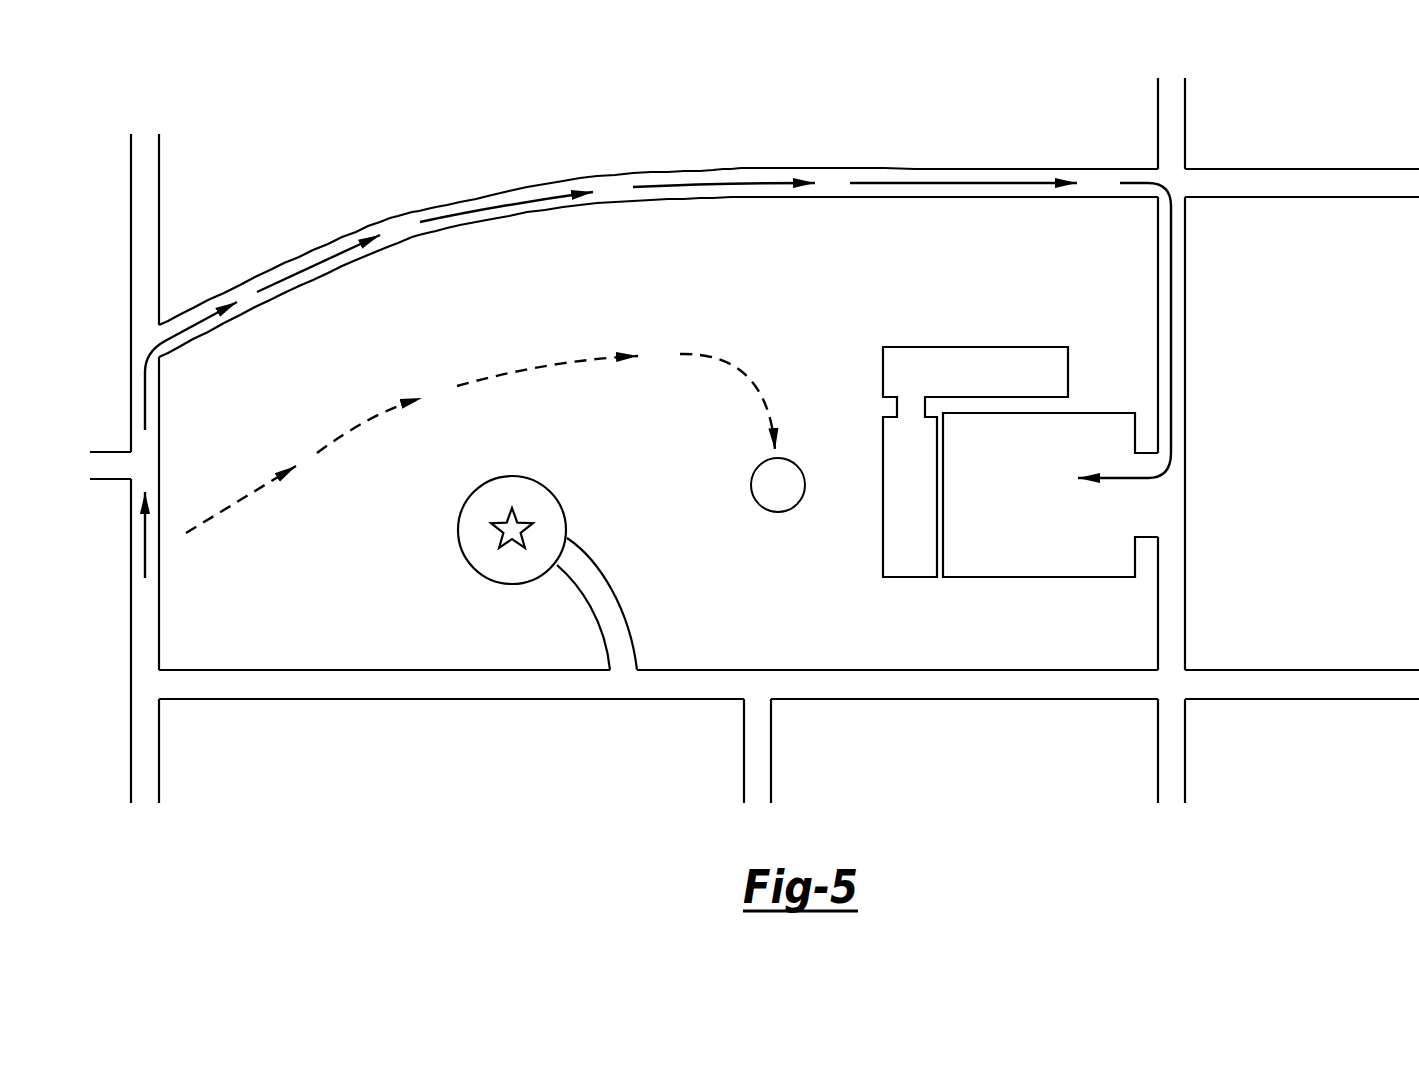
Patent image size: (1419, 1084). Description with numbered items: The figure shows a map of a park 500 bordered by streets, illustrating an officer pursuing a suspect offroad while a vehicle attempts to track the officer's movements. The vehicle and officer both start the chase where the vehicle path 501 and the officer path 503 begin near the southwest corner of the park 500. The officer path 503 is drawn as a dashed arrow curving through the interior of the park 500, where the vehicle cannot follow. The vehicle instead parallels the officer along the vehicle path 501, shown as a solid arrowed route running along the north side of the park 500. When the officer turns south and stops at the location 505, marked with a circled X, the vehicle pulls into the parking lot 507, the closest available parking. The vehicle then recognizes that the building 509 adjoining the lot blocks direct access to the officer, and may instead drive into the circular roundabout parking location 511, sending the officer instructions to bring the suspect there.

The park 500 is at (995, 273).
The vehicle path 501 is at (145, 550).
The officer path 503 is at (232, 506).
The officer stopped location 505 is at (778, 512).
The parking lot 507 is at (1105, 482).
The building 509 is at (913, 565).
The parking location 511 is at (512, 528).